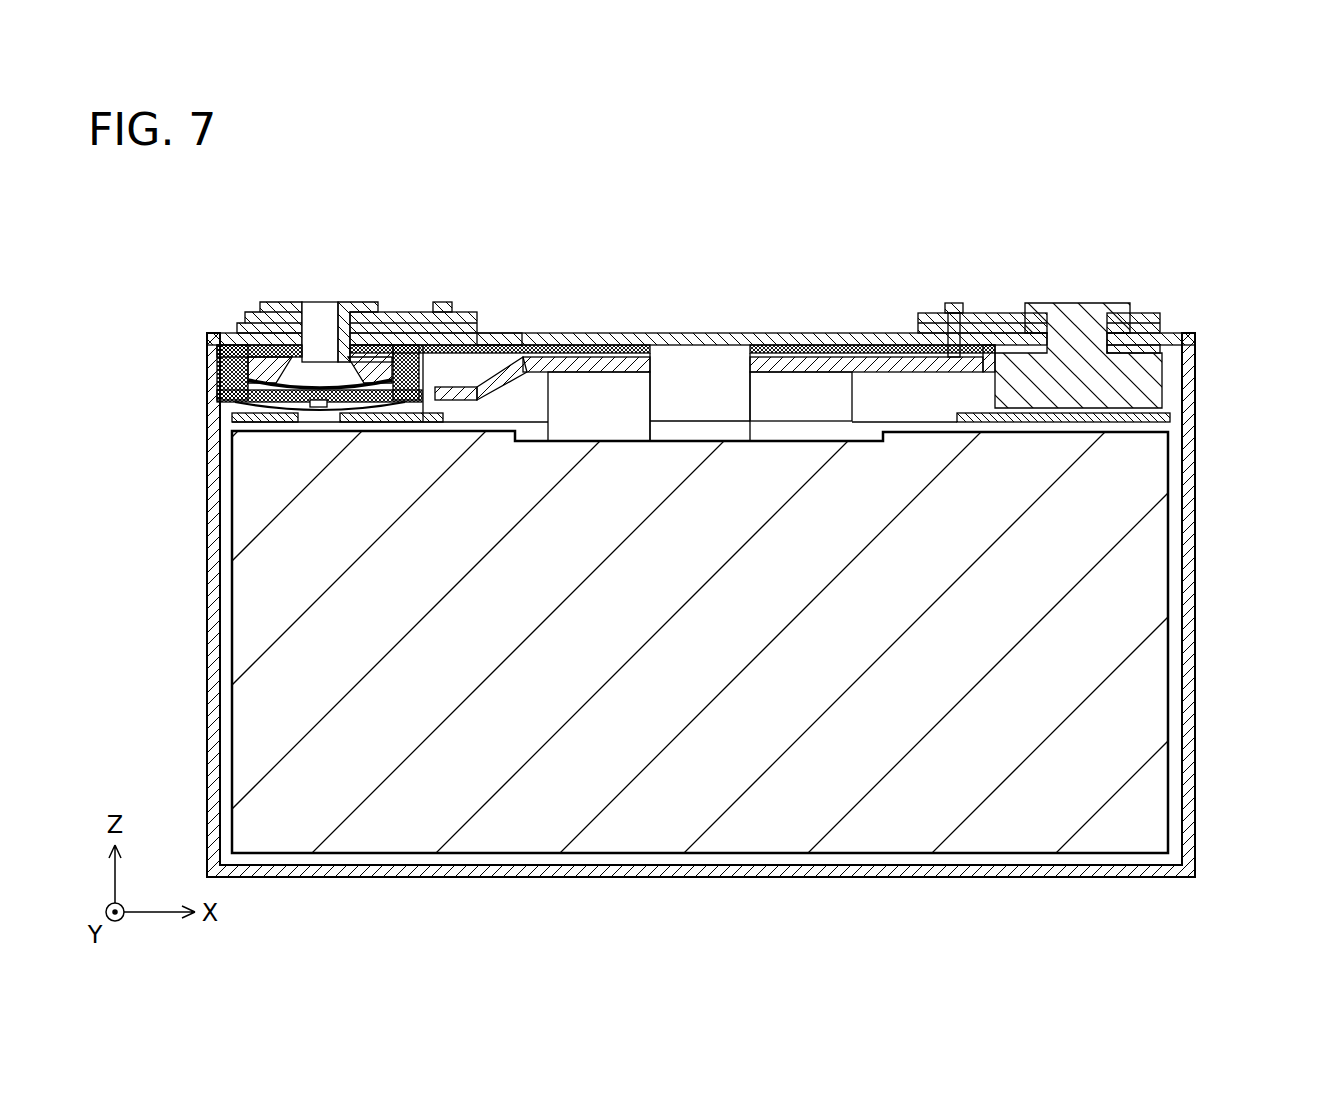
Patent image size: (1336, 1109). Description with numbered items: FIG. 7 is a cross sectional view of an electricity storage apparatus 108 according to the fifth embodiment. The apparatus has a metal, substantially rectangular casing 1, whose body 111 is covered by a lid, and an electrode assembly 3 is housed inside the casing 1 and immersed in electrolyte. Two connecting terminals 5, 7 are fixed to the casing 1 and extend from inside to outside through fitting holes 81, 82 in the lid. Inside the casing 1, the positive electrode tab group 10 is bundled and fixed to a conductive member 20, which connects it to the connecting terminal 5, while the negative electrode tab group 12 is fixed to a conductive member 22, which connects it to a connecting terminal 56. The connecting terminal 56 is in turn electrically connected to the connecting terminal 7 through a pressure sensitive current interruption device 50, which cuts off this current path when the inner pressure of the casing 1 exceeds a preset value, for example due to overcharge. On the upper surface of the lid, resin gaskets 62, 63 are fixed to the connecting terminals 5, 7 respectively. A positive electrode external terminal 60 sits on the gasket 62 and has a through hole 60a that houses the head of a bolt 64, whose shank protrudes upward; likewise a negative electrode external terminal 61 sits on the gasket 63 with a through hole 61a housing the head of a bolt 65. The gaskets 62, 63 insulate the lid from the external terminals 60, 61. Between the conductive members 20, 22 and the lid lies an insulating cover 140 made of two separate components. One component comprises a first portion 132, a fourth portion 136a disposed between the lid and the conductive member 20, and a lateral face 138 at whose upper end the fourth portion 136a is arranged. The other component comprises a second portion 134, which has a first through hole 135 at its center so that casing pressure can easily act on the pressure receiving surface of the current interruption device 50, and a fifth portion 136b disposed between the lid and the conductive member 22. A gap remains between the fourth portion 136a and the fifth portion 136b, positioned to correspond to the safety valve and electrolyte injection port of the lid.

The casing 1 is at (768, 605).
The body 111 is at (1195, 605).
The electrode assembly 3 is at (1108, 725).
The connecting terminal 5 is at (1078, 296).
The connecting terminal 7 is at (308, 292).
The positive electrode tab group 10 is at (778, 421).
The negative electrode tab group 12 is at (623, 421).
The conductive member 20 is at (935, 340).
The conductive member 22 is at (490, 370).
The current interruption device 50 is at (228, 408).
The connecting terminal 56 is at (495, 332).
The positive electrode external terminal 60 is at (982, 310).
The through hole 60a is at (955, 303).
The negative electrode external terminal 61 is at (410, 310).
The through hole 61a is at (449, 305).
The gasket 62 is at (1013, 307).
The gasket 63 is at (394, 308).
The bolt 64 is at (968, 303).
The bolt 65 is at (441, 304).
The fitting hole 81 is at (1082, 303).
The fitting hole 82 is at (295, 303).
The electricity storage apparatus 108 is at (1036, 263).
The first portion 132 is at (987, 346).
The second portion 134 is at (442, 417).
The first through hole 135 is at (297, 413).
The fourth portion 136a is at (760, 345).
The fifth portion 136b is at (633, 340).
The lateral face 138 is at (863, 383).
The insulating cover 140 is at (701, 321).